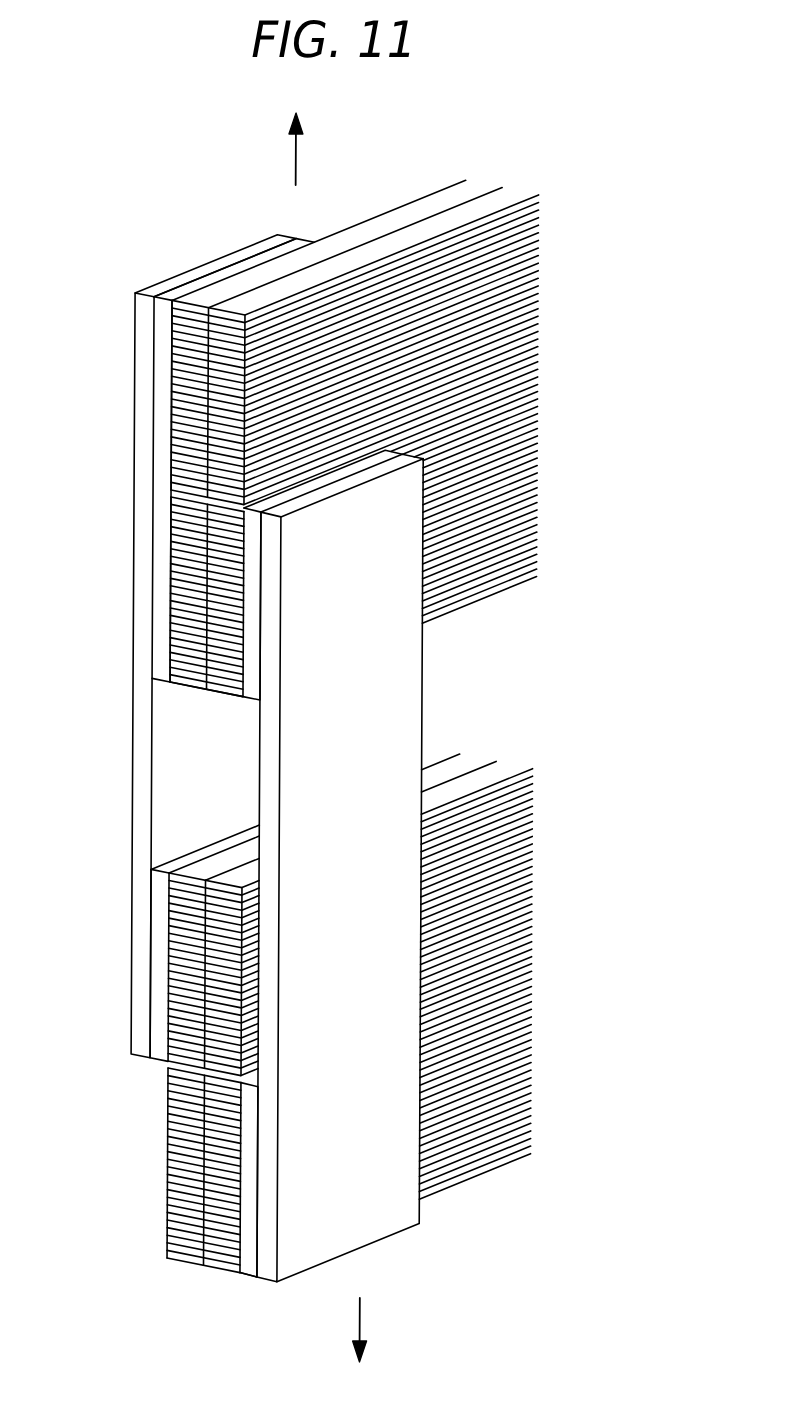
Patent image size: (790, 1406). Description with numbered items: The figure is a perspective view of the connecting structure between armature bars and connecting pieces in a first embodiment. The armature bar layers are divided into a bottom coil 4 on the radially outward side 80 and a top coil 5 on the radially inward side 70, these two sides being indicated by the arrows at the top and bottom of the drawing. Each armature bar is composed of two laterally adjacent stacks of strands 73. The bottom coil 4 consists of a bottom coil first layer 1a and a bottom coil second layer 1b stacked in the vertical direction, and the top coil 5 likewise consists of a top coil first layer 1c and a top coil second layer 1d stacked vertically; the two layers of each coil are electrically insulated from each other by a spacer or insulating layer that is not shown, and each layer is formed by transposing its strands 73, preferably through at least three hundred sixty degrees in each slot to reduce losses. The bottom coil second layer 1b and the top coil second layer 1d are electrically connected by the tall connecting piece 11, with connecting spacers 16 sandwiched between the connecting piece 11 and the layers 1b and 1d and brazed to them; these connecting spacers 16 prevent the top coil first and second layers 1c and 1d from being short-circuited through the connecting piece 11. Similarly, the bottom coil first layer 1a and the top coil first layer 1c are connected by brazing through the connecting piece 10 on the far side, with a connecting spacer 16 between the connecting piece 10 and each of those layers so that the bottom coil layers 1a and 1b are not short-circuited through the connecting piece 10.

The bottom coil first layer 1a is at (540, 188).
The bottom coil second layer 1b is at (380, 544).
The top coil first layer 1c is at (534, 761).
The top coil second layer 1d is at (376, 1119).
The bottom coil 4 is at (411, 438).
The top coil 5 is at (405, 1015).
The connecting piece 10 is at (141, 757).
The connecting piece 11 is at (394, 703).
The connecting spacer 16 is at (161, 331).
The strands 73 is at (191, 407).
The radially inward side 70 is at (376, 1330).
The radially outward side 80 is at (315, 149).